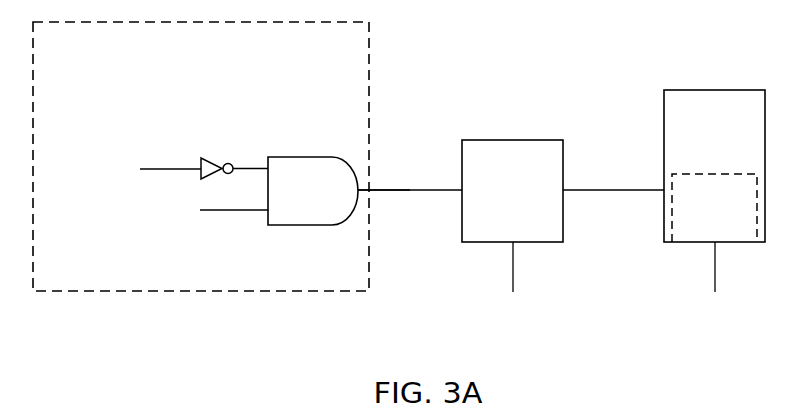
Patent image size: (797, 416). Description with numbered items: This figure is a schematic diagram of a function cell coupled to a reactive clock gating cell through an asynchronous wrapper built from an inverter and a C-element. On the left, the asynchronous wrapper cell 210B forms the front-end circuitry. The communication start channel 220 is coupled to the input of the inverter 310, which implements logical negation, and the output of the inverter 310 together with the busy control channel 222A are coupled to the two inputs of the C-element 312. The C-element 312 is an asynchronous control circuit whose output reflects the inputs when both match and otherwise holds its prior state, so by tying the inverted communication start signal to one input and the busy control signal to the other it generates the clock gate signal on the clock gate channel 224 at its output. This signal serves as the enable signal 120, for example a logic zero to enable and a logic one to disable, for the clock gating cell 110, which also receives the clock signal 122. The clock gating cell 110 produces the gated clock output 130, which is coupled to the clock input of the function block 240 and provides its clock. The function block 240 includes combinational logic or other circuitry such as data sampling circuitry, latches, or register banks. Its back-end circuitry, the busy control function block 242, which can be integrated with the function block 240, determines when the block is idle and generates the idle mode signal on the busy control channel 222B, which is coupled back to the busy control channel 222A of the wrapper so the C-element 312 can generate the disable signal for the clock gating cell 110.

The asynchronous wrapper cell 210B is at (180, 92).
The inverter 310 is at (208, 161).
The communication start channel 220 is at (151, 175).
The busy control channel 222A is at (212, 206).
The C-element 312 is at (298, 210).
The enable signal 120 is at (410, 164).
The clock gate channel 224 is at (391, 218).
The clock gating cell 110 is at (498, 210).
The clock signal 122 is at (513, 294).
The gated clock output 130 is at (613, 164).
The function block 240 is at (701, 152).
The busy control function block 242 is at (701, 228).
The busy control channel 222B is at (715, 294).